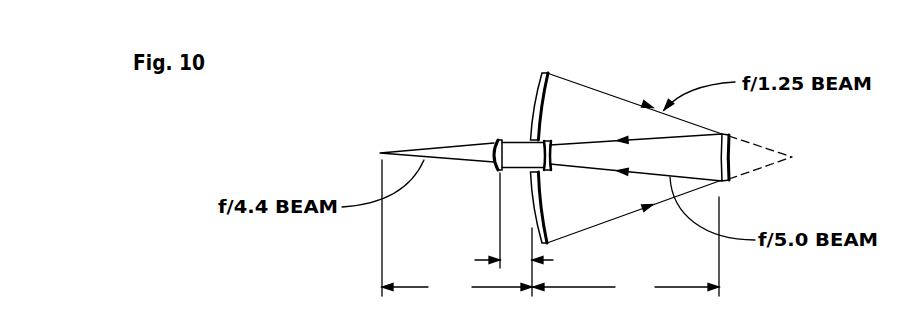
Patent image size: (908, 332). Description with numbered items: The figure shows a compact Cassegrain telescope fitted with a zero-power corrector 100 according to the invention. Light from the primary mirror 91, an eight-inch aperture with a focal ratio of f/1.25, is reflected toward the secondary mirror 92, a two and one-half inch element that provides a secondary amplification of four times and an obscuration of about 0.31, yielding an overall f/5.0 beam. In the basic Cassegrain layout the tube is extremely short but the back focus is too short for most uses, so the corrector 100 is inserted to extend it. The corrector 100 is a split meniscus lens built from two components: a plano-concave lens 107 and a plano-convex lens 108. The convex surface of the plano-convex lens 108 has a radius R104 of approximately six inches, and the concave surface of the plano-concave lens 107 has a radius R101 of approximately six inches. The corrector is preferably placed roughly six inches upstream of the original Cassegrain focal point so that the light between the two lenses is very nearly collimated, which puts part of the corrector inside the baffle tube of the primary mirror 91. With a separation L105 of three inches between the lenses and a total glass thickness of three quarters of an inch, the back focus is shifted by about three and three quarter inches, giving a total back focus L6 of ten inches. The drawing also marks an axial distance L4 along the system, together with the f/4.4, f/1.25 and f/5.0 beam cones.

The corrector 100 is at (448, 136).
The primary mirror 91 is at (534, 86).
The secondary mirror 92 is at (730, 163).
The plano-concave lens 107 is at (551, 140).
The plano-convex lens 108 is at (494, 143).
The radius of the concave surface R101 is at (549, 163).
The radius of the convex surface R104 is at (492, 163).
The total back focus L6 is at (457, 230).
The axial distance L4 is at (626, 248).
The separation between the lenses L105 is at (542, 222).